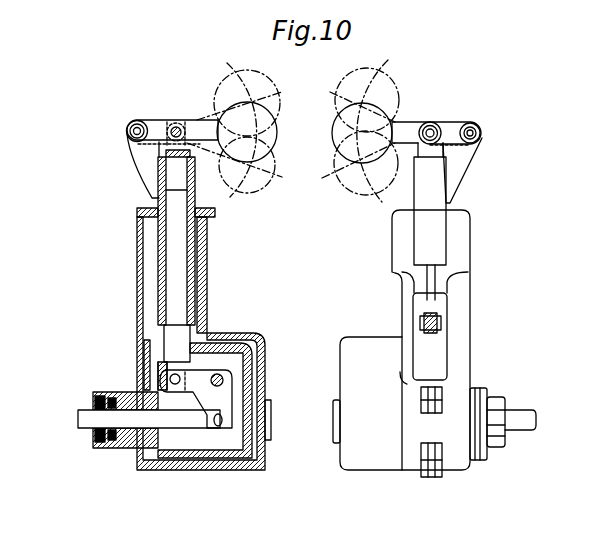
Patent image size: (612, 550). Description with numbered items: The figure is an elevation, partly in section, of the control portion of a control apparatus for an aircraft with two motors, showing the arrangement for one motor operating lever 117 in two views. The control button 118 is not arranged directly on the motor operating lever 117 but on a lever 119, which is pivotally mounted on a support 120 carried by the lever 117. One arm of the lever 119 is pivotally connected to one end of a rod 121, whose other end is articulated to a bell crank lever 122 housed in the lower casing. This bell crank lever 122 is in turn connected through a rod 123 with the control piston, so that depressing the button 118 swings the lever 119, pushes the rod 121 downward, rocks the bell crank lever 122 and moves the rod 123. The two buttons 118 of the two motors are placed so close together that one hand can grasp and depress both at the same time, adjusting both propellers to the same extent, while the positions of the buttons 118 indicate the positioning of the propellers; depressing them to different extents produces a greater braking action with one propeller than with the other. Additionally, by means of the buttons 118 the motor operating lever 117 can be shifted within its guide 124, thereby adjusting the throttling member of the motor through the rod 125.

The motor operating lever 117 is at (163, 248).
The control button 118 is at (333, 127).
The lever 119 is at (167, 122).
The support 120 is at (142, 163).
The rod 121 is at (178, 262).
The bell crank lever 122 is at (205, 372).
The rod 123 is at (90, 423).
The guide 124 is at (140, 334).
The rod 125 is at (436, 311).